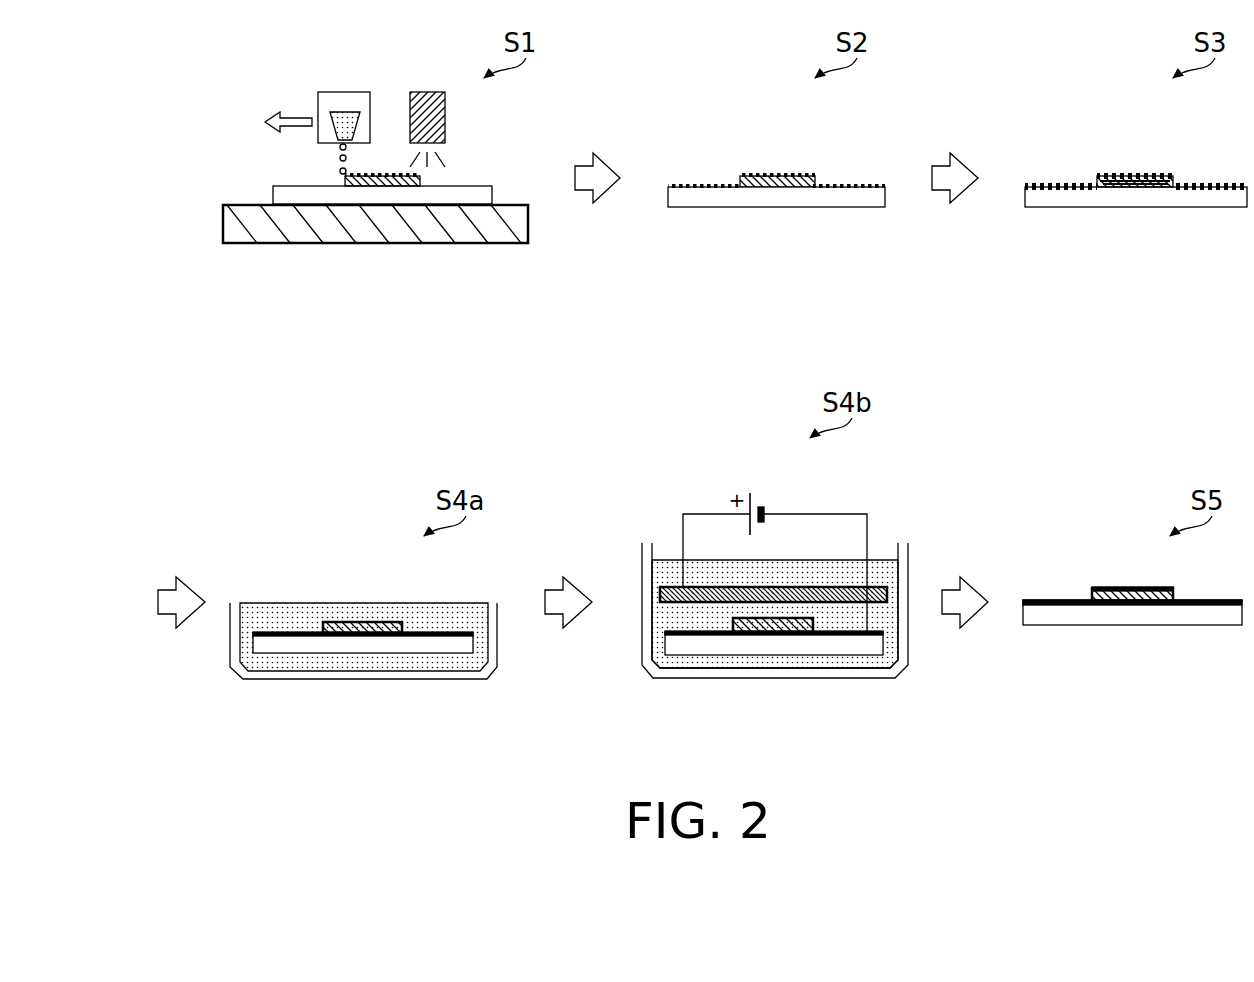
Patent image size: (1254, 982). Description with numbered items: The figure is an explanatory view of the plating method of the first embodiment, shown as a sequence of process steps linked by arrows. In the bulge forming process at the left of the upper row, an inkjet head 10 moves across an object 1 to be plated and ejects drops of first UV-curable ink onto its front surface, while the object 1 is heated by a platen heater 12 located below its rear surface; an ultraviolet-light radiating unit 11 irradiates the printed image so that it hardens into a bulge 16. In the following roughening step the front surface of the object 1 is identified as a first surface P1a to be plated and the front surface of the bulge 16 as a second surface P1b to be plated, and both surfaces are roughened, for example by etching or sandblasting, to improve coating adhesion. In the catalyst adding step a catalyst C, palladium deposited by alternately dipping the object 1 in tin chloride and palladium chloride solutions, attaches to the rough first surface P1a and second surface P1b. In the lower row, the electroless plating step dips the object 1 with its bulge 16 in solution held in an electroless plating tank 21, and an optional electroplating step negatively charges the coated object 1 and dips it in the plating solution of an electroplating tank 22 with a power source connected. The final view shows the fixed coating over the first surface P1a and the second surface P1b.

The inkjet head 10 is at (345, 91).
The ultraviolet-light radiating unit 11 is at (428, 91).
The object to be plated 1 is at (493, 194).
The bulge 16 is at (378, 175).
The platen heater 12 is at (387, 245).
The electroless plating tank 21 is at (362, 681).
The electroplating tank 22 is at (777, 681).
The first surface to be plated P1a is at (705, 186).
The second surface to be plated P1b is at (770, 173).
The catalyst C is at (1108, 178).